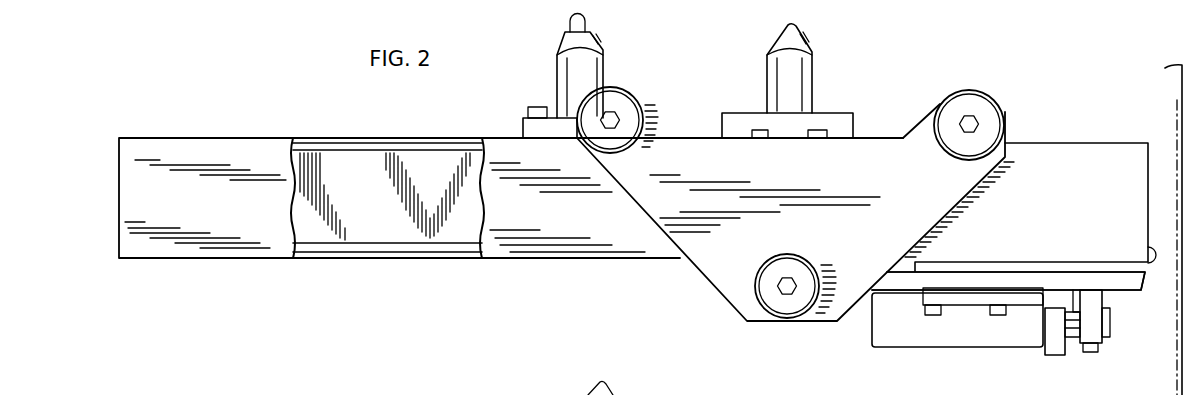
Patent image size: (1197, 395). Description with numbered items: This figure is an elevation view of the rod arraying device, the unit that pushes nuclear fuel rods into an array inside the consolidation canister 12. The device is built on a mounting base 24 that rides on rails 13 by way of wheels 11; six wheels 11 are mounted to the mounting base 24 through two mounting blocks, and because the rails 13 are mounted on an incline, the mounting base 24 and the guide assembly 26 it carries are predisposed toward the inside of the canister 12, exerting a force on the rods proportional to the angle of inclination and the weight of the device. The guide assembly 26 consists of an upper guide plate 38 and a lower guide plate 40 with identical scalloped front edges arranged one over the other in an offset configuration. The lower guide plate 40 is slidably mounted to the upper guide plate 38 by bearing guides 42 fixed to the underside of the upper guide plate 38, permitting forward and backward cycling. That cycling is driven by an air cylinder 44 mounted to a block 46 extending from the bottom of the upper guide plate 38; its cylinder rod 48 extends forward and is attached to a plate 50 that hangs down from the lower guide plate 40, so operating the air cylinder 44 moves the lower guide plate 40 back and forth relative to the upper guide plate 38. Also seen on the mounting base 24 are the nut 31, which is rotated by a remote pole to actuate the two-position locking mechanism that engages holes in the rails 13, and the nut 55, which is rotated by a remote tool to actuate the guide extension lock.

The wheels 11 is at (621, 101).
The consolidation canister 12 is at (1170, 82).
The rails 13 is at (360, 230).
The mounting base 24 is at (1035, 150).
The guide assembly 26 is at (1112, 297).
The nut 31 is at (782, 43).
The upper guide plate 38 is at (1148, 247).
The lower guide plate 40 is at (1140, 282).
The bearing guides 42 is at (977, 297).
The air cylinder 44 is at (903, 333).
The block 46 is at (1057, 357).
The cylinder rod 48 is at (1068, 333).
The plate 50 is at (1100, 343).
The nut 55 is at (563, 40).